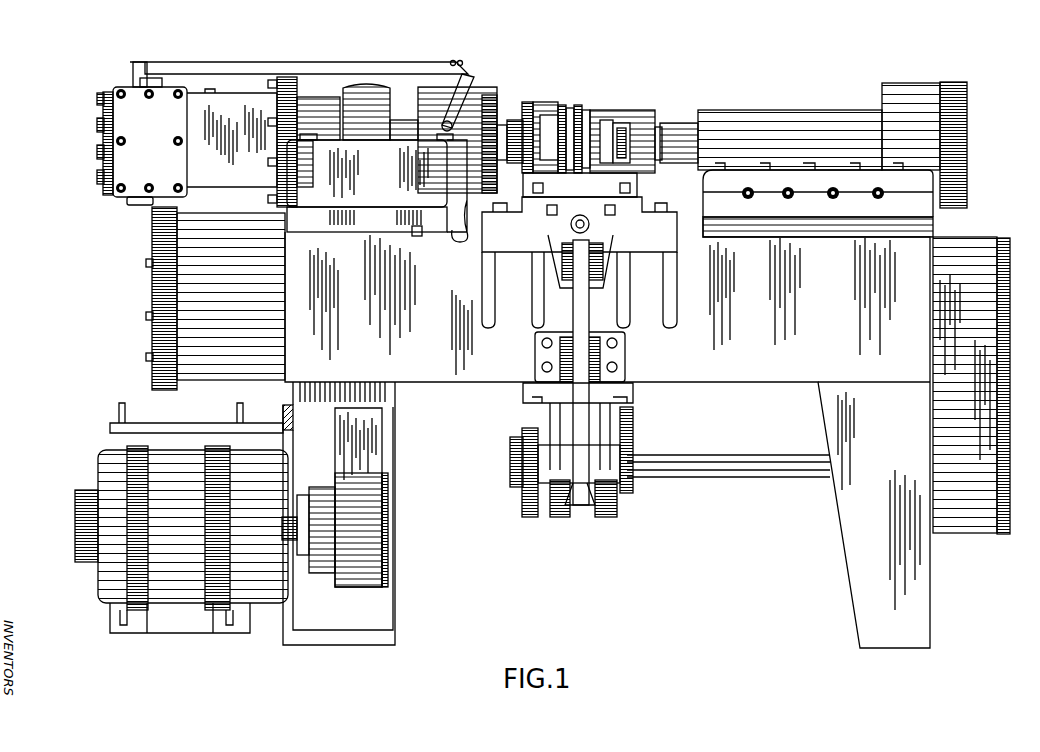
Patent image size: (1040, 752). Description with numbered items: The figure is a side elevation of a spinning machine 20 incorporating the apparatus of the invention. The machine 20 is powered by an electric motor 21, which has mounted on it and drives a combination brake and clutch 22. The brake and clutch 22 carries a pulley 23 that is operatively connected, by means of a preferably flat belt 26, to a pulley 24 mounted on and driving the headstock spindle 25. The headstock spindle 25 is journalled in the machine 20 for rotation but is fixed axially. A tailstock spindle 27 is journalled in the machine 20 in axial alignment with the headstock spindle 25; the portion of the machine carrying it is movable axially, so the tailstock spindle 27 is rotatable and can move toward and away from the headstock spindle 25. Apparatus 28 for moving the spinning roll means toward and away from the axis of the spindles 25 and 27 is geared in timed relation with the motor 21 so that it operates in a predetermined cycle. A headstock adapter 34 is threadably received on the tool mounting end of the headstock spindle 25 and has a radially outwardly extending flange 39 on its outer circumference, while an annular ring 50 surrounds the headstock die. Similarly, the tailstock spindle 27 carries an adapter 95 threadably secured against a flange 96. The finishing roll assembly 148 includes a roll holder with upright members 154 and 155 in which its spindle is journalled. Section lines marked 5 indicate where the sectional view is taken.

The spinning machine 20 is at (141, 290).
The electric motor 21 is at (106, 473).
The combination brake and clutch 22 is at (322, 560).
The pulley 23 is at (388, 548).
The pulley 24 is at (393, 100).
The headstock spindle 25 is at (510, 150).
The flat belt 26 is at (375, 440).
The tailstock spindle 27 is at (680, 122).
The spinning roll moving apparatus 28 is at (600, 316).
The headstock adapter 34 is at (515, 147).
The flange 39 is at (530, 102).
The annular ring 50 is at (550, 102).
The tailstock adapter 95 is at (637, 110).
The flange 96 is at (658, 120).
The finishing roll assembly 148 is at (580, 175).
The upright member 154 is at (480, 200).
The upright member 155 is at (623, 148).
The section line 5- 5 is at (509, 92).